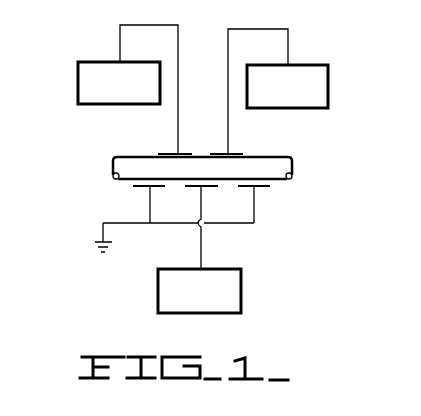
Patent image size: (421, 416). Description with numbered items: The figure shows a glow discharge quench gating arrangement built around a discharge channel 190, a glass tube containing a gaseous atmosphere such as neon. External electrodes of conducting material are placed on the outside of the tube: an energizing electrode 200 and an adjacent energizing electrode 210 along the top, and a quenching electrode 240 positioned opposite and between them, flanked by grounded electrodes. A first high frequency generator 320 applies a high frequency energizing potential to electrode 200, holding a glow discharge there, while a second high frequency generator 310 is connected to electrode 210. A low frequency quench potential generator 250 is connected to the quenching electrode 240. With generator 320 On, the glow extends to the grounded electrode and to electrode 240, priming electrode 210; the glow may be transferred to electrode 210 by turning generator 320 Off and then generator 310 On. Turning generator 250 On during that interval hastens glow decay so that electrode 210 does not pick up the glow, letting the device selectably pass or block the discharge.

The discharge channel 190 is at (280, 163).
The energizing electrode 200 is at (176, 153).
The adjacent energizing electrode 210 is at (240, 153).
The quenching electrode 240 is at (200, 187).
The low frequency quench potential generator 250 is at (241, 286).
The second high frequency generator 310 is at (328, 80).
The first high frequency generator 320 is at (78, 75).